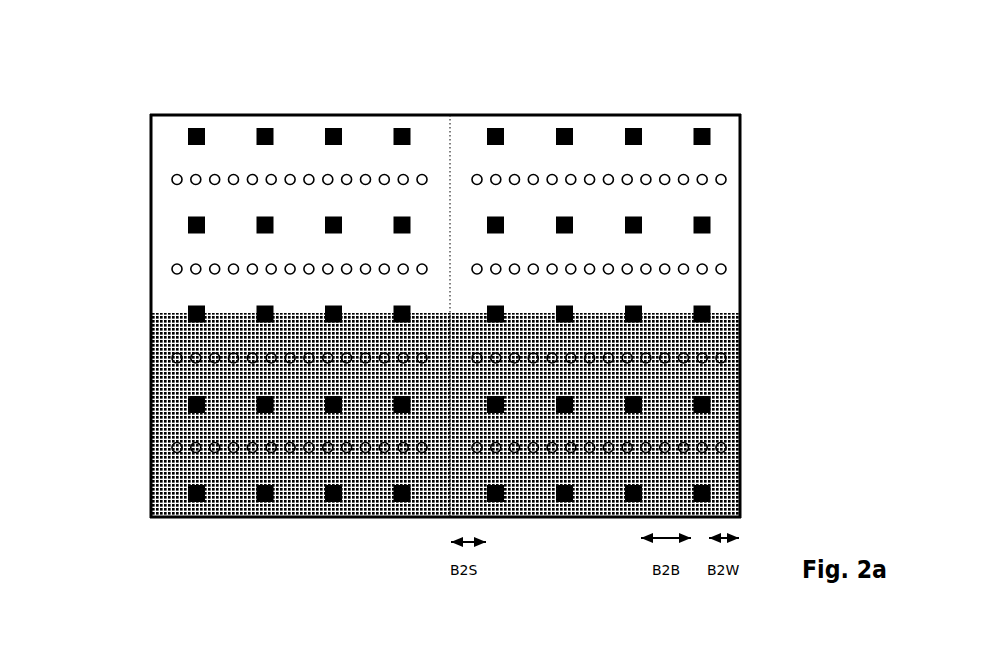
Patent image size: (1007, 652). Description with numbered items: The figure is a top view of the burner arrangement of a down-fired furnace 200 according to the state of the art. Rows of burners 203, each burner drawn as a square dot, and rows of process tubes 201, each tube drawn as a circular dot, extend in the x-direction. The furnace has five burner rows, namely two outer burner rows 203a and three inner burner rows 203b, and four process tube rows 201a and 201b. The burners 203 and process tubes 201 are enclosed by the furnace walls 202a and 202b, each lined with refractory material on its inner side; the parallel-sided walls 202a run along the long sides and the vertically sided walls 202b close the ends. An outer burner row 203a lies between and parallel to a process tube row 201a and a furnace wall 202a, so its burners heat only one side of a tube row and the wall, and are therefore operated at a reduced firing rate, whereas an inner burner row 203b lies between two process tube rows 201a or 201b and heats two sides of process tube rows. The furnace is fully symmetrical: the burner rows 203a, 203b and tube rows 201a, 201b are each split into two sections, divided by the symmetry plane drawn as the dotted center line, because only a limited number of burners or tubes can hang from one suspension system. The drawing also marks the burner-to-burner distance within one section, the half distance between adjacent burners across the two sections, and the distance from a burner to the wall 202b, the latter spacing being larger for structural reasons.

The furnace 200 is at (770, 77).
The process tube 201 is at (424, 172).
The process tube row 201a is at (127, 184).
The process tube row 201b is at (127, 272).
The furnace wall 202a is at (225, 113).
The furnace wall 202b is at (150, 145).
The burner 203 is at (343, 128).
The outer burner row 203a is at (127, 136).
The inner burner row 203b is at (127, 224).